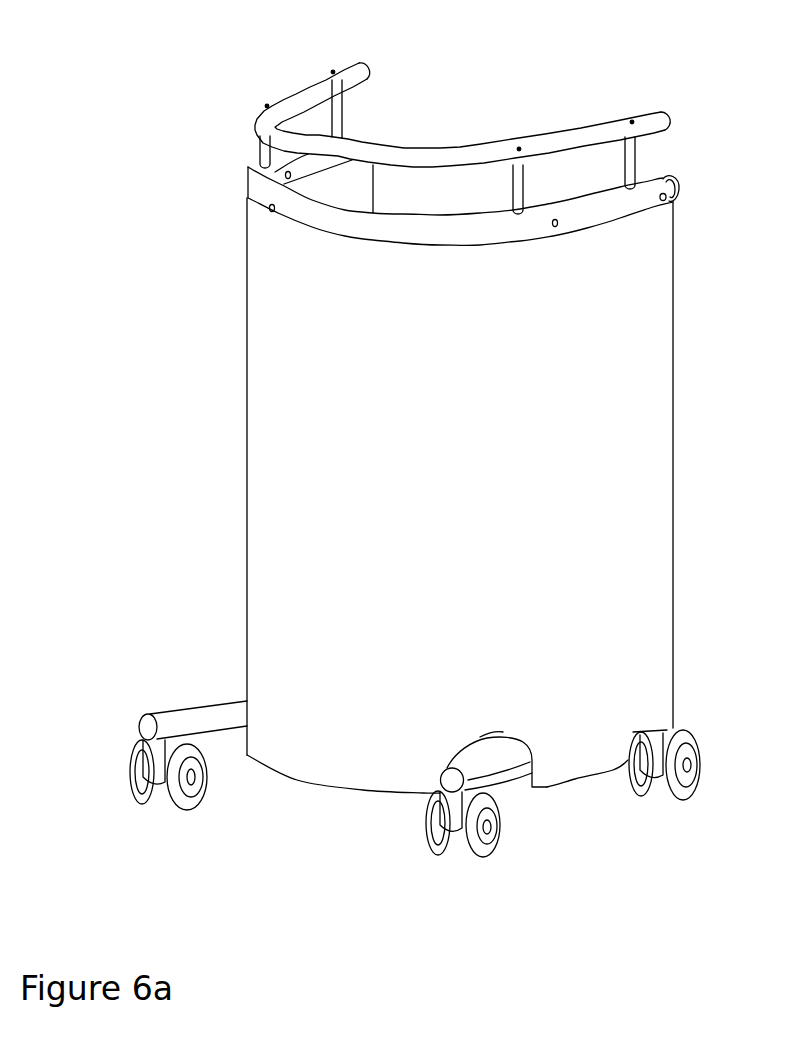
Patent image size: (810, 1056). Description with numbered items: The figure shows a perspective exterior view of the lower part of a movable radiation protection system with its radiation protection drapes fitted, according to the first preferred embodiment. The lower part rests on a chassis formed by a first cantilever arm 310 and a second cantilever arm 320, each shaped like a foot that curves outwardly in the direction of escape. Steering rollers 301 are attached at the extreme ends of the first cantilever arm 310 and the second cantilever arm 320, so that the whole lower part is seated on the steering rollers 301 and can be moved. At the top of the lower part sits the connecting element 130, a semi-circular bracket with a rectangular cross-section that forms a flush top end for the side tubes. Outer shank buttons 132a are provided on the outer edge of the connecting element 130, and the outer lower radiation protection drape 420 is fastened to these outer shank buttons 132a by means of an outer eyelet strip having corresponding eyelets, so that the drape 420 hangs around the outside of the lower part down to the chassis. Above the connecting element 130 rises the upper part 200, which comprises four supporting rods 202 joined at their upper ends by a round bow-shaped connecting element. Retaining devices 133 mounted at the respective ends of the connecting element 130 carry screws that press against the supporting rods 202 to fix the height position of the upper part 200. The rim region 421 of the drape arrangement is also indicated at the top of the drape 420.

The connecting element 130 is at (265, 182).
The outer shank button 132a is at (668, 199).
The retaining device 133 is at (681, 188).
The upper part 200 is at (355, 72).
The supporting rod 202 is at (339, 108).
The steering roller 301 is at (176, 806).
The first cantilever arm 310 is at (203, 718).
The second cantilever arm 320 is at (497, 755).
The outer lower radiation protection drape 420 is at (650, 417).
The drum rim 421 is at (438, 232).